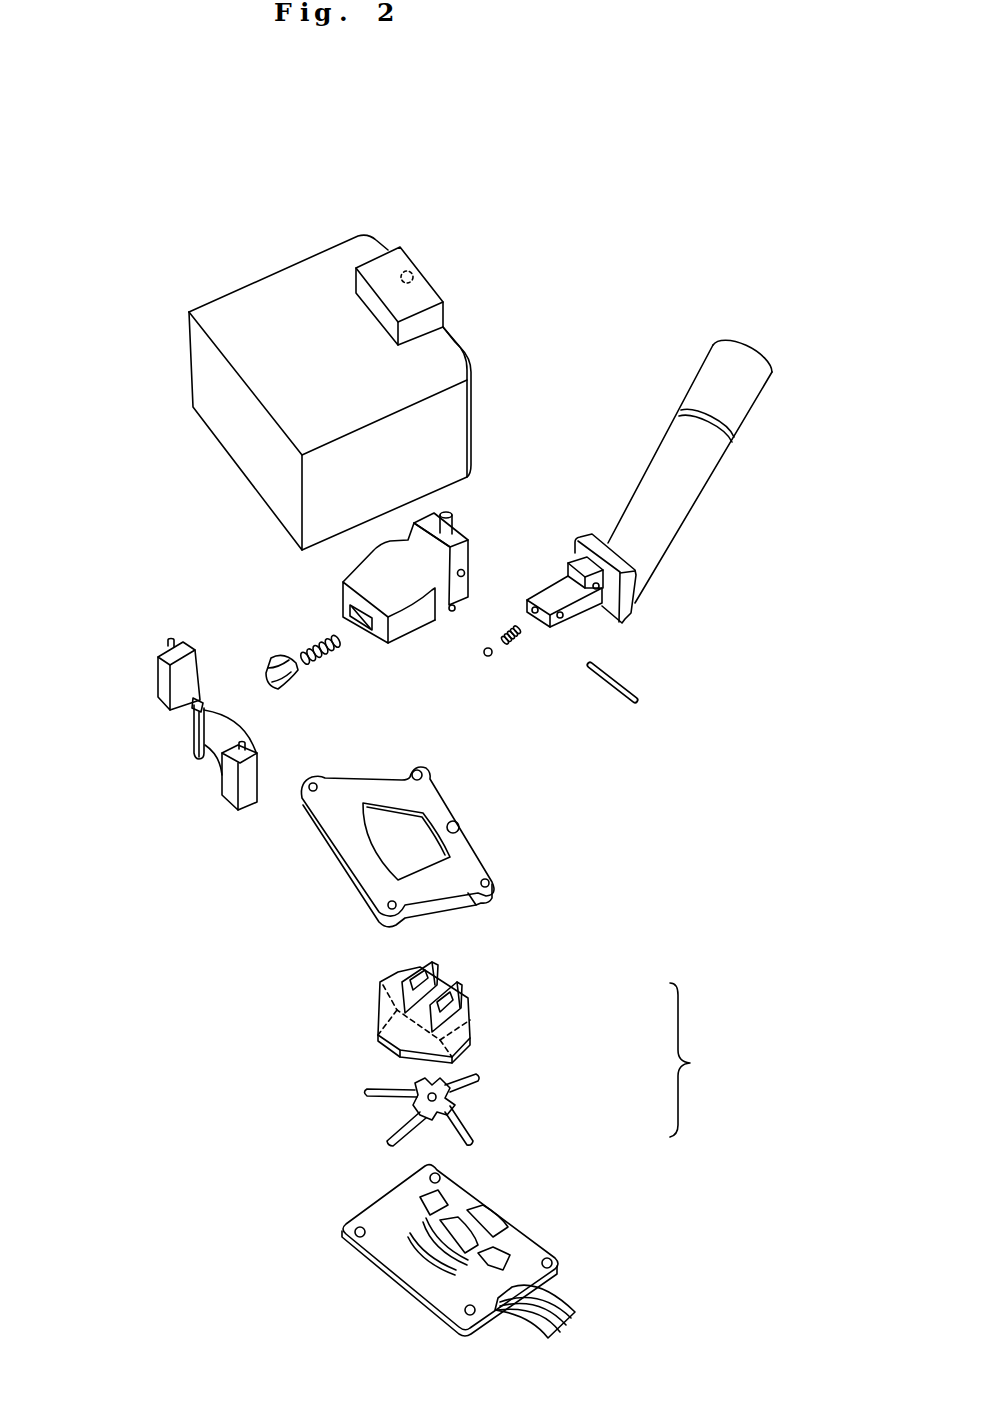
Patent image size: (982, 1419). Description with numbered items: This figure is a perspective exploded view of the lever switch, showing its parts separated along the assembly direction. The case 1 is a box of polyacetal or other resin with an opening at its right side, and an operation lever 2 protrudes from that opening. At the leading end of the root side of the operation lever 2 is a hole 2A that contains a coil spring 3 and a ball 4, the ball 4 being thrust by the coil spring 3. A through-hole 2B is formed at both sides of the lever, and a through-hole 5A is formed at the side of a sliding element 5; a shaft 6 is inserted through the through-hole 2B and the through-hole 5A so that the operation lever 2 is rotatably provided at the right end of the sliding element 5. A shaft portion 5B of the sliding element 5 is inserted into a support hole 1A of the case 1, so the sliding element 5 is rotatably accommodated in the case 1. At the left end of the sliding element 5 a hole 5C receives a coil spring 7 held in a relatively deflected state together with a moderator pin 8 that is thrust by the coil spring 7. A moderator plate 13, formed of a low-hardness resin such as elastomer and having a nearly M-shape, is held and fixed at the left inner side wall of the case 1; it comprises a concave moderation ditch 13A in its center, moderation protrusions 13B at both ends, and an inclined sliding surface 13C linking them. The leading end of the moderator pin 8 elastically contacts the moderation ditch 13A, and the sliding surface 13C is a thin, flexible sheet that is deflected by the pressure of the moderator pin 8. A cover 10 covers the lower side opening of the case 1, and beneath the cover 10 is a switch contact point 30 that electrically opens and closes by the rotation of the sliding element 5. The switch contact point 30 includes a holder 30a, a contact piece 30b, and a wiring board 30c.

The case 1 is at (272, 300).
The support hole 1A is at (415, 270).
The operation lever 2 is at (690, 483).
The hole 2A is at (561, 616).
The through-hole 2B is at (636, 606).
The coil spring 3 is at (516, 641).
The ball 4 is at (490, 657).
The sliding element 5 is at (364, 525).
The through-hole 5A is at (465, 570).
The shaft portion 5B is at (448, 510).
The hole 5C is at (345, 612).
The shaft 6 is at (621, 697).
The coil spring 7 is at (306, 648).
The moderator pin 8 is at (269, 661).
The cover 10 is at (327, 867).
The moderator plate 13 is at (208, 800).
The moderation ditch 13A is at (193, 723).
The moderation protrusions 13B is at (170, 663).
The sliding surface 13C is at (190, 705).
The switch contact point 30 is at (538, 1150).
The holder 30a is at (505, 1008).
The contact piece 30b is at (488, 1095).
The wiring board 30c is at (513, 1197).